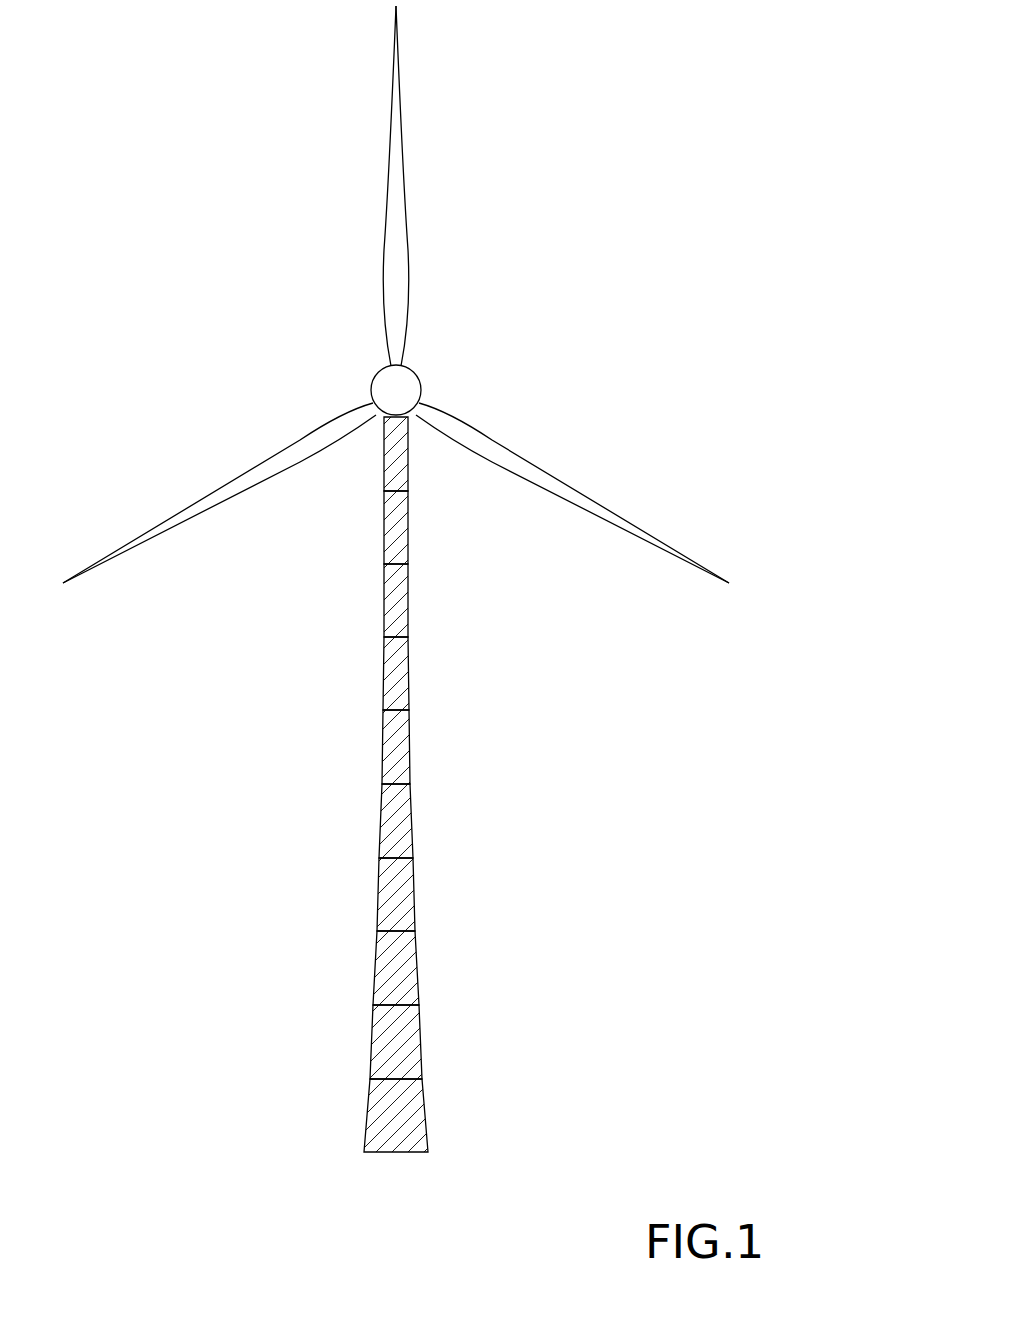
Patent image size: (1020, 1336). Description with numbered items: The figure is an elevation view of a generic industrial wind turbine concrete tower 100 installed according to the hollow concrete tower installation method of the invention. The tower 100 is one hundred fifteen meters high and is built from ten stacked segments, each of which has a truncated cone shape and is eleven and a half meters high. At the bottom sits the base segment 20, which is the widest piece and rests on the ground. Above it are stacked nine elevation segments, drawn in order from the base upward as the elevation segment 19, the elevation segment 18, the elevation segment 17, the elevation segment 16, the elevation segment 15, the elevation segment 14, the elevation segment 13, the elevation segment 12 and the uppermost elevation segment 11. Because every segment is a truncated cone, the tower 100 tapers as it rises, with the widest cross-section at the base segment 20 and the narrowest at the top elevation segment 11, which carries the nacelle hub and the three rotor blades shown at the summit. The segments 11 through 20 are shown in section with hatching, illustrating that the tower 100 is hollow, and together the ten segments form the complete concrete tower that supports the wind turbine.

The industrial wind turbine concrete tower 100 is at (510, 603).
The elevation segment 11 is at (408, 462).
The elevation segment 12 is at (408, 540).
The elevation segment 13 is at (383, 605).
The elevation segment 14 is at (383, 672).
The elevation segment 15 is at (382, 742).
The elevation segment 16 is at (380, 812).
The elevation segment 17 is at (378, 893).
The elevation segment 18 is at (375, 966).
The elevation segment 19 is at (372, 1042).
The base segment 20 is at (368, 1118).